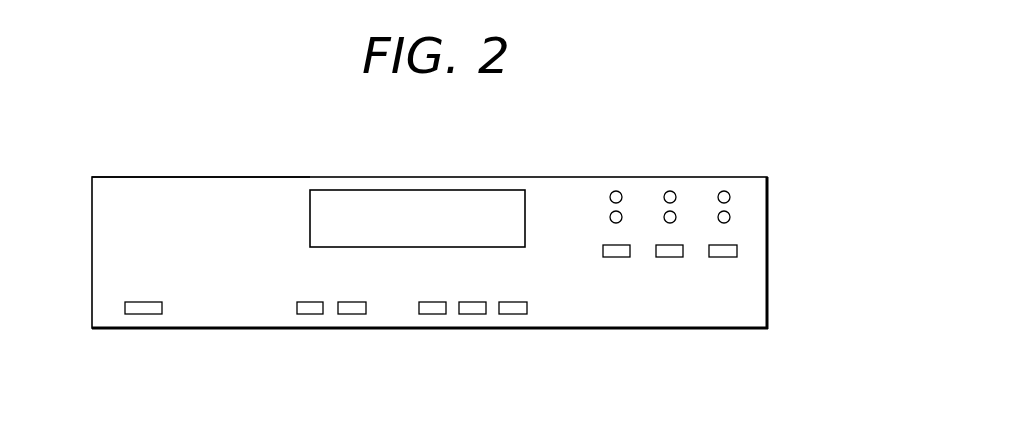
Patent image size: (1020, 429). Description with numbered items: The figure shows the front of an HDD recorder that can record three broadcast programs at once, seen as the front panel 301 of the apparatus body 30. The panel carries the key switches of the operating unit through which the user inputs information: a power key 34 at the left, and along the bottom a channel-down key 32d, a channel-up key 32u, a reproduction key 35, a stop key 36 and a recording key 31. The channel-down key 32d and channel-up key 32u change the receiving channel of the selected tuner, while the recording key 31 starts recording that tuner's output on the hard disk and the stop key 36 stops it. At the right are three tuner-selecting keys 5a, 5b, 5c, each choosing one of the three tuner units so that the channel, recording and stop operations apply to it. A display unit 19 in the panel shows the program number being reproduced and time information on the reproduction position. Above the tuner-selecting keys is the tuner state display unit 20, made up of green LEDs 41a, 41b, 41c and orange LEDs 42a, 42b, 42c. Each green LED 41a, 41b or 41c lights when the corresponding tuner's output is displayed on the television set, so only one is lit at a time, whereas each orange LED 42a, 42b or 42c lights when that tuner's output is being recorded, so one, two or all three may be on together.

The apparatus body 30 is at (270, 177).
The front panel 301 is at (152, 190).
The display unit 19 is at (477, 190).
The tuner state display unit 20 is at (592, 228).
The LED 41a is at (616, 191).
The LED 41b is at (670, 191).
The LED 41c is at (724, 191).
The LED 42a is at (610, 215).
The LED 42b is at (664, 215).
The LED 42c is at (718, 215).
The tuner-selecting key 5a is at (618, 257).
The tuner-selecting key 5b is at (671, 257).
The tuner-selecting key 5c is at (725, 257).
The power key 34 is at (145, 314).
The channel-down key 32d is at (310, 314).
The channel-up key 32u is at (353, 314).
The reproduction key 35 is at (433, 314).
The stop key 36 is at (473, 314).
The recording key 31 is at (514, 314).